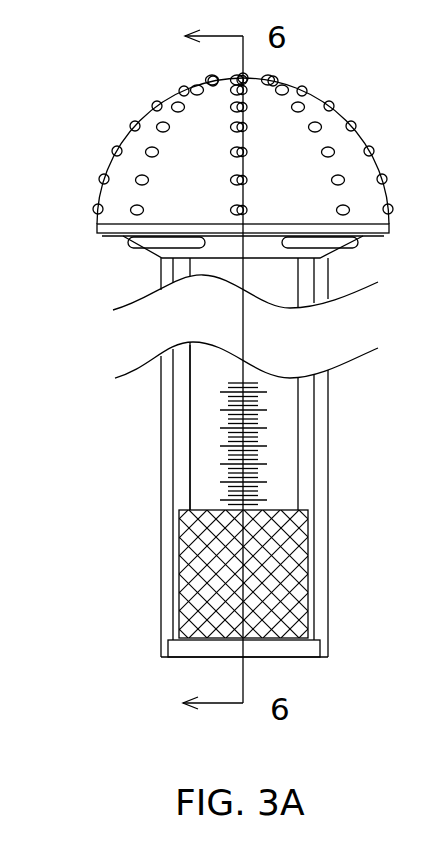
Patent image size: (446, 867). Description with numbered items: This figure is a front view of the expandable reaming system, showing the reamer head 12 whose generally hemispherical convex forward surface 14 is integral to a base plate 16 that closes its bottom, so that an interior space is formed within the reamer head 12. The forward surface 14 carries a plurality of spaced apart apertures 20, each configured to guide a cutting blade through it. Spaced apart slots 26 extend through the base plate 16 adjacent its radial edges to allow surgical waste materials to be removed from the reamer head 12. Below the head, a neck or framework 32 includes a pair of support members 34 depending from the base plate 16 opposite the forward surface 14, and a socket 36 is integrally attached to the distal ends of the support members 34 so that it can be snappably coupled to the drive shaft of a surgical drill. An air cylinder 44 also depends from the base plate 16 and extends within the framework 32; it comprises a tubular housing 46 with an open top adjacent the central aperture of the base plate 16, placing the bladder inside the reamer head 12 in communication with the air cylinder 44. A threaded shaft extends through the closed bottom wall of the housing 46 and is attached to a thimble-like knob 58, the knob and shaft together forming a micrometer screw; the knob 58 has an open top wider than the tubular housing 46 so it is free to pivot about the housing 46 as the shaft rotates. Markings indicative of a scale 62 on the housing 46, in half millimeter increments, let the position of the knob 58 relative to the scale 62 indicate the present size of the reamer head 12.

The reamer head 12 is at (125, 88).
The generally hemispherical convex forward surface 14 is at (123, 142).
The base plate 16 is at (157, 250).
The apertures 20 is at (232, 180).
The slots 26 is at (137, 240).
The neck or framework 32 is at (142, 412).
The support members 34 is at (158, 447).
The socket 36 is at (192, 657).
The air cylinder 44 is at (185, 460).
The tubular housing 46 is at (188, 357).
The thimble-like knob 58 is at (180, 545).
The scale 62 is at (257, 438).